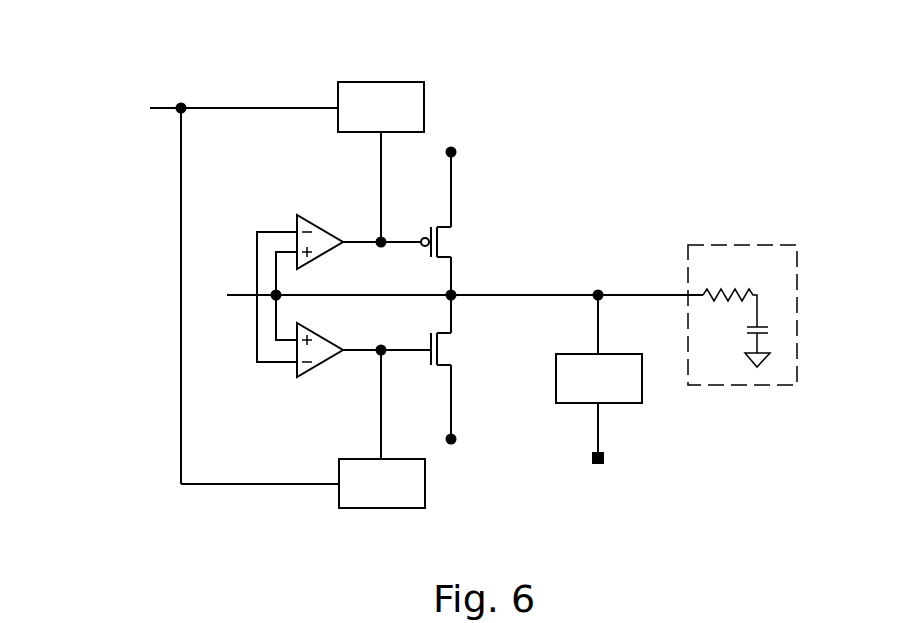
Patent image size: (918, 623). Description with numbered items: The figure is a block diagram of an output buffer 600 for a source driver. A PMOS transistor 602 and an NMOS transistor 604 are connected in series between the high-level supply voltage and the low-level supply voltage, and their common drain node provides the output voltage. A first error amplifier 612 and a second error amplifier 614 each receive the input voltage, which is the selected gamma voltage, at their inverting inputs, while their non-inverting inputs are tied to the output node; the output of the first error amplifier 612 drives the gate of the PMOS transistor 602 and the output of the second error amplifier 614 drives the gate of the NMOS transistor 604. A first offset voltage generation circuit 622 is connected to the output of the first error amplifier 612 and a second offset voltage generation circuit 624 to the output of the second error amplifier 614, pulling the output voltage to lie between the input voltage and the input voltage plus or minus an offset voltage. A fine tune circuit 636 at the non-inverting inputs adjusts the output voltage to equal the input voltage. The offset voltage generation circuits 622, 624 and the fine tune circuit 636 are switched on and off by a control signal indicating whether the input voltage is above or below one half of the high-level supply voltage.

The output buffer 600 is at (80, 28).
The PMOS transistor 602 is at (448, 240).
The NMOS transistor 604 is at (450, 349).
The first error amplifier 612 is at (323, 232).
The second error amplifier 614 is at (325, 353).
The first offset voltage generation circuit 622 is at (417, 98).
The second offset voltage generation circuit 624 is at (417, 492).
The fine tune circuit 636 is at (637, 383).